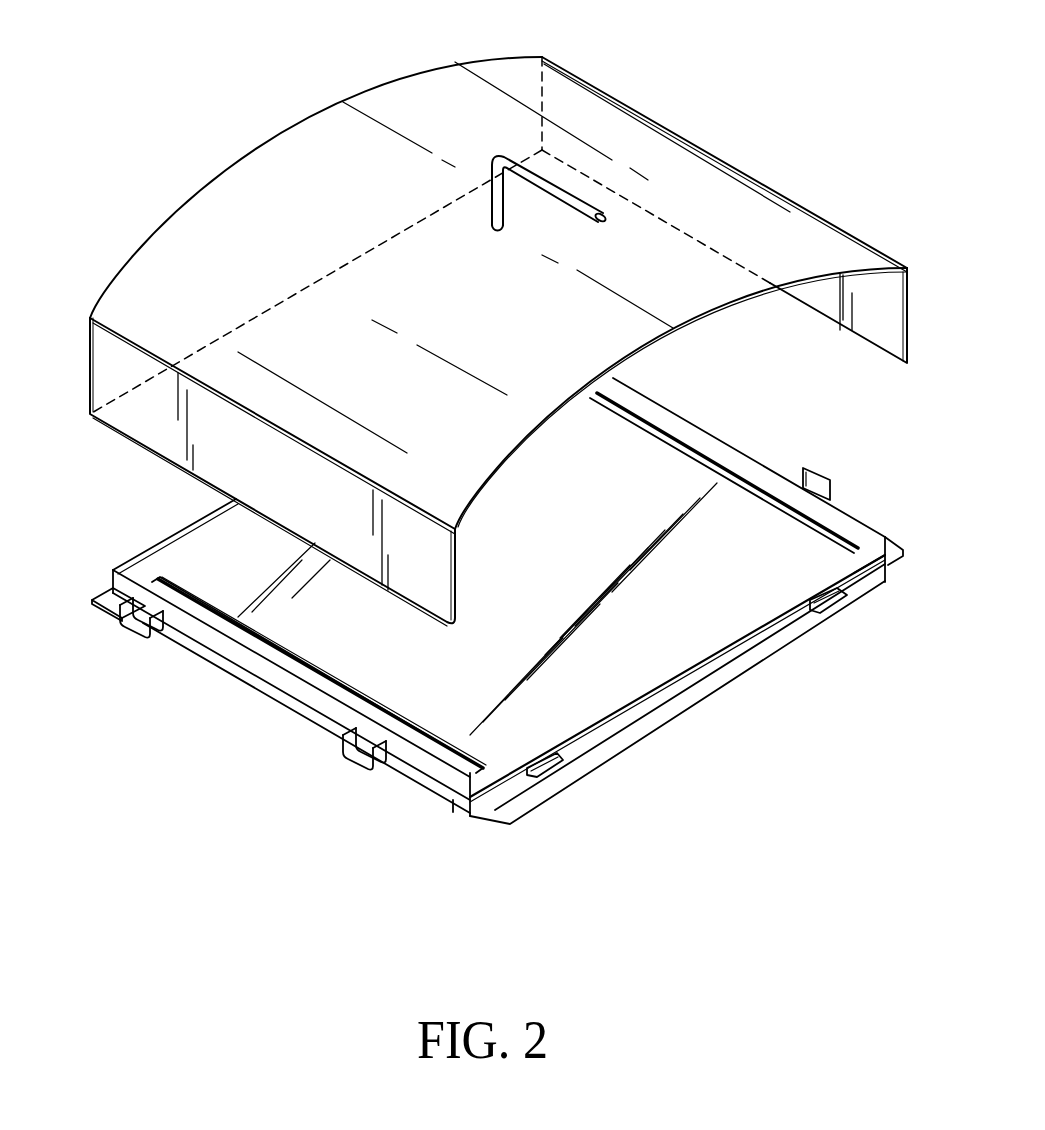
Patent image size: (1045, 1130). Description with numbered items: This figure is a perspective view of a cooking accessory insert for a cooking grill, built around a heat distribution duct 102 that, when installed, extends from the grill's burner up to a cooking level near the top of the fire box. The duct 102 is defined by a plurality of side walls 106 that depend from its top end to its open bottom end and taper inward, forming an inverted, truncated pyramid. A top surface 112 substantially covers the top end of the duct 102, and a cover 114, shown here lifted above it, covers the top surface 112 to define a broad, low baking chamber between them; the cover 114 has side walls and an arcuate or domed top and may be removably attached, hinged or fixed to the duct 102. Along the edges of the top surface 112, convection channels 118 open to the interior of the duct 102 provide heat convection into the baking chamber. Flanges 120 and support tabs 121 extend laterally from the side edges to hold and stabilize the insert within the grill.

The heat distribution duct 102 is at (627, 760).
The side walls 106 is at (720, 688).
The top surface 112 is at (680, 468).
The cover 114 is at (643, 115).
The convection channel 118 is at (763, 497).
The flanges 120 is at (103, 595).
The support tabs 121 is at (847, 607).